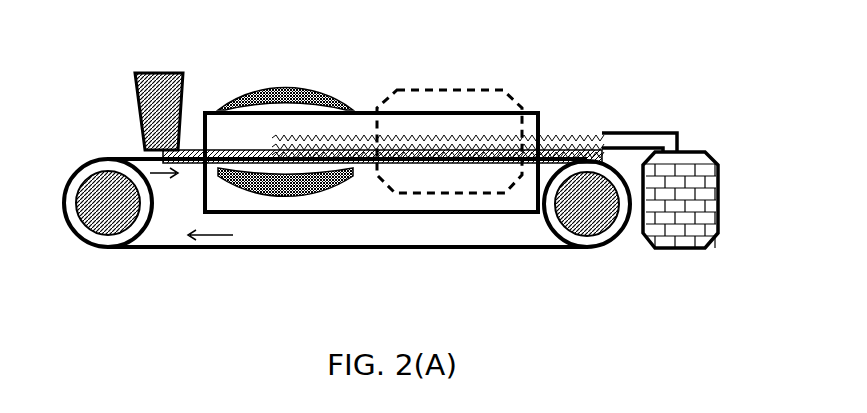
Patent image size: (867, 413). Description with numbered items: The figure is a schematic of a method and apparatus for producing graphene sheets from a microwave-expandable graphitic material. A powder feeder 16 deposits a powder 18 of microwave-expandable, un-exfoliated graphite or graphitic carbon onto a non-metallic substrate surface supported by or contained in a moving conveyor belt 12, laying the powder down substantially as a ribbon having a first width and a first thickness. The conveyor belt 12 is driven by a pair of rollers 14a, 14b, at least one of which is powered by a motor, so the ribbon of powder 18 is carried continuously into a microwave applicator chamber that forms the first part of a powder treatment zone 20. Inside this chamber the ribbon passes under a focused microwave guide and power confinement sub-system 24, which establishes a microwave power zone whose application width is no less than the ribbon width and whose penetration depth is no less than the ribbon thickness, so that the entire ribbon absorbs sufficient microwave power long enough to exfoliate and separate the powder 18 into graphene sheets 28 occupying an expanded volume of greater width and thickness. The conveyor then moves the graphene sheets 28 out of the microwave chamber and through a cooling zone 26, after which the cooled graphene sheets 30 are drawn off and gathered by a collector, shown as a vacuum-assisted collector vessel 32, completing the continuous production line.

The conveyor belt 12 is at (137, 162).
The roller 14a is at (87, 230).
The roller 14b is at (610, 228).
The powder feeder 16 is at (158, 100).
The powder 18 is at (188, 157).
The powder treatment zone 20 is at (385, 214).
The focused microwave guide and power confinement sub-system 24 is at (278, 88).
The cooling zone 26 is at (448, 88).
The graphene sheets 28 is at (293, 150).
The cooled graphene sheets 30 is at (575, 140).
The vacuum-assisted collector vessel 32 is at (703, 195).